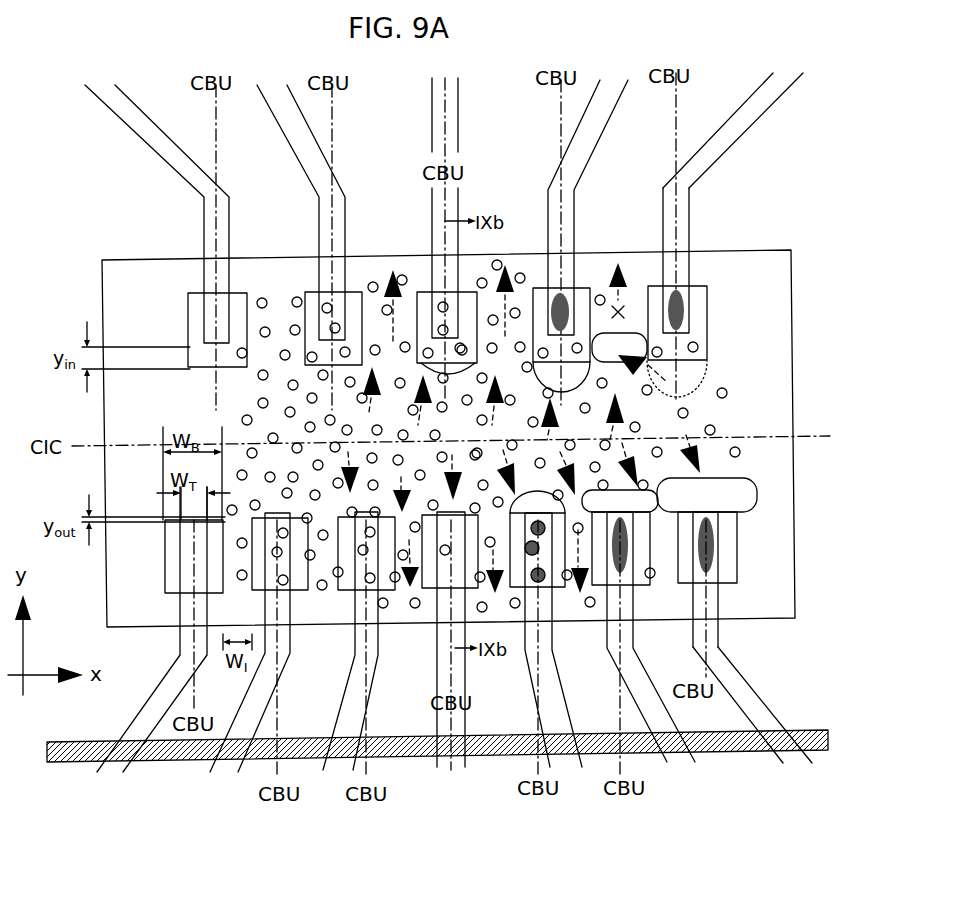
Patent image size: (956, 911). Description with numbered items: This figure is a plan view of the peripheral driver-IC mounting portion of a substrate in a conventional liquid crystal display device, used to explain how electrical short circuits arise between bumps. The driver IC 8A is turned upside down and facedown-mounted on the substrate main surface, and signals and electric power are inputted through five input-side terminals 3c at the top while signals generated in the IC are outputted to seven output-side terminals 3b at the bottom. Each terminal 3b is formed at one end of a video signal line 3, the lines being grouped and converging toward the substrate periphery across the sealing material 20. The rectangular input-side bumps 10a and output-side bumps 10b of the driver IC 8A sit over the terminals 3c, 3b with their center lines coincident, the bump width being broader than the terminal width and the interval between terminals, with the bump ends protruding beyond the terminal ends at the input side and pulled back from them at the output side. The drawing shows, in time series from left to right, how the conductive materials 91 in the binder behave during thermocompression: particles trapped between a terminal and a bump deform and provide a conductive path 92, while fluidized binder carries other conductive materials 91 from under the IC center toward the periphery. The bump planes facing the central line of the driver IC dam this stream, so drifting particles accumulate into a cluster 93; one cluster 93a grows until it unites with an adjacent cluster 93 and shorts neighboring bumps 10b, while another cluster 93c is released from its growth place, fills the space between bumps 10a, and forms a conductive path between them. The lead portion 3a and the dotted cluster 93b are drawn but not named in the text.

The video signal line 3 is at (760, 637).
The upper lead portion 3a is at (728, 137).
The output-side terminal 3b is at (723, 603).
The input-side terminal 3c is at (690, 268).
The driver IC 8A is at (792, 264).
The input-side bump 10a is at (707, 318).
The output-side bump 10b is at (738, 545).
The sealing material 20 is at (803, 730).
The conductive material 91 is at (294, 328).
The conductive path 92 is at (713, 583).
The cluster 93 is at (575, 378).
The cluster 93a is at (742, 484).
The dotted meniscus 93b is at (705, 380).
The cluster 93c is at (637, 333).